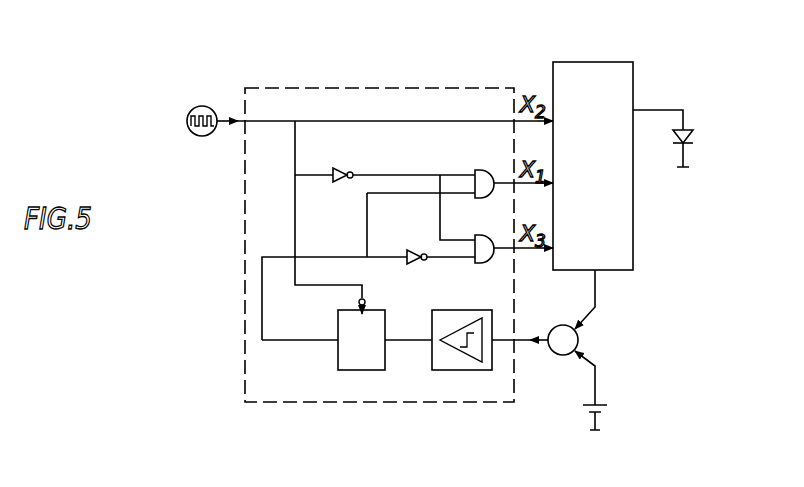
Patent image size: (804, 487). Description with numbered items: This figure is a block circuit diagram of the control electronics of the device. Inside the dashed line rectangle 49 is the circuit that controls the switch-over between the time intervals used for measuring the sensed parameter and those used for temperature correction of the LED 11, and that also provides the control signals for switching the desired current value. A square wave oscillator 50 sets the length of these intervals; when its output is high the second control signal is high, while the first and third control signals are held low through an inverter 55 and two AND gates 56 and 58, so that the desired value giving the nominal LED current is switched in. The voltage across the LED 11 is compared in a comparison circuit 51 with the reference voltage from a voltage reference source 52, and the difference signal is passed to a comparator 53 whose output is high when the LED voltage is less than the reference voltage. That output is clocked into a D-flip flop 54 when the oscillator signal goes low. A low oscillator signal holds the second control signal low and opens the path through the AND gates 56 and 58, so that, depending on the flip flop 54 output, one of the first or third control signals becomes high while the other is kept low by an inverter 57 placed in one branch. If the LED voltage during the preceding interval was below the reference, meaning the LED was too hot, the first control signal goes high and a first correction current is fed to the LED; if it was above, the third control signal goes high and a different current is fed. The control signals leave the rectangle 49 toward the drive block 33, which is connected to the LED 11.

The LED 11 is at (689, 134).
The drive circuit 33 is at (609, 61).
The dashed line rectangle 49 is at (483, 86).
The square wave oscillator 50 is at (201, 106).
The comparison circuit 51 is at (553, 327).
The voltage reference source 52 is at (585, 412).
The comparator 53 is at (478, 309).
The D-flip flop 54 is at (378, 309).
The inverter 55 is at (338, 168).
The AND gate 56 is at (478, 171).
The inverter 57 is at (412, 250).
The AND gate 58 is at (483, 235).